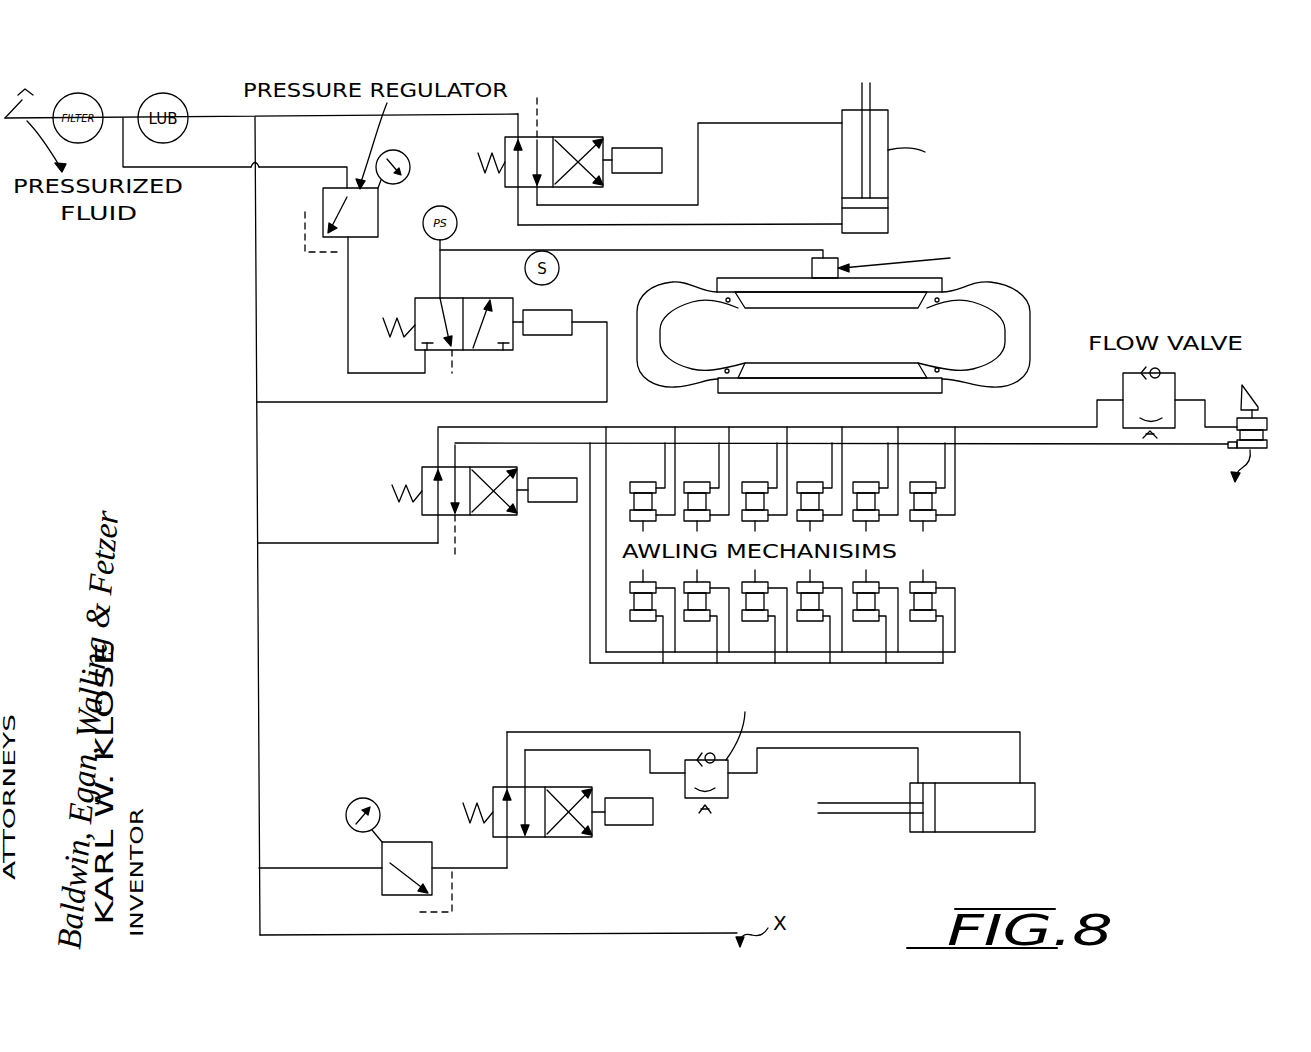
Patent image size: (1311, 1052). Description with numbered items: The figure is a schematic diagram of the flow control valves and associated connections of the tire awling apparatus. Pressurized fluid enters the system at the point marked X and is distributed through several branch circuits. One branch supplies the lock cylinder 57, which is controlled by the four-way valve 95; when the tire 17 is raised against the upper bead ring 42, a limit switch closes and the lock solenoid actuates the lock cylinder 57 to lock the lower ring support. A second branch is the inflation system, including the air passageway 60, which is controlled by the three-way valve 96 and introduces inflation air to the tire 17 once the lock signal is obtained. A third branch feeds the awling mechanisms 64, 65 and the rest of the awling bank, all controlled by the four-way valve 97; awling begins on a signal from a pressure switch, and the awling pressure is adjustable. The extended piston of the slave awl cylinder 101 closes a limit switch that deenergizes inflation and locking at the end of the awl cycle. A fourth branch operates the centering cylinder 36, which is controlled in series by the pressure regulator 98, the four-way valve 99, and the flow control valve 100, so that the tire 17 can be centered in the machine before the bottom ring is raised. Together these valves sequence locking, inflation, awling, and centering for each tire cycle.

The tire 17 is at (858, 319).
The centering cylinder 36 is at (1020, 797).
The upper bead ring 42 is at (758, 284).
The lock cylinder 57 is at (888, 220).
The air passageway 60 is at (683, 250).
The awling mechanism 64 is at (937, 500).
The awling mechanism 65 is at (937, 600).
The four-way valve 95 is at (603, 137).
The three-way valve 96 is at (478, 298).
The four-way valve 97 is at (430, 467).
The pressure regulator 98 is at (382, 853).
The four-way valve 99 is at (507, 787).
The flow control valve 100 is at (746, 805).
The slave awl cylinder 101 is at (1232, 437).